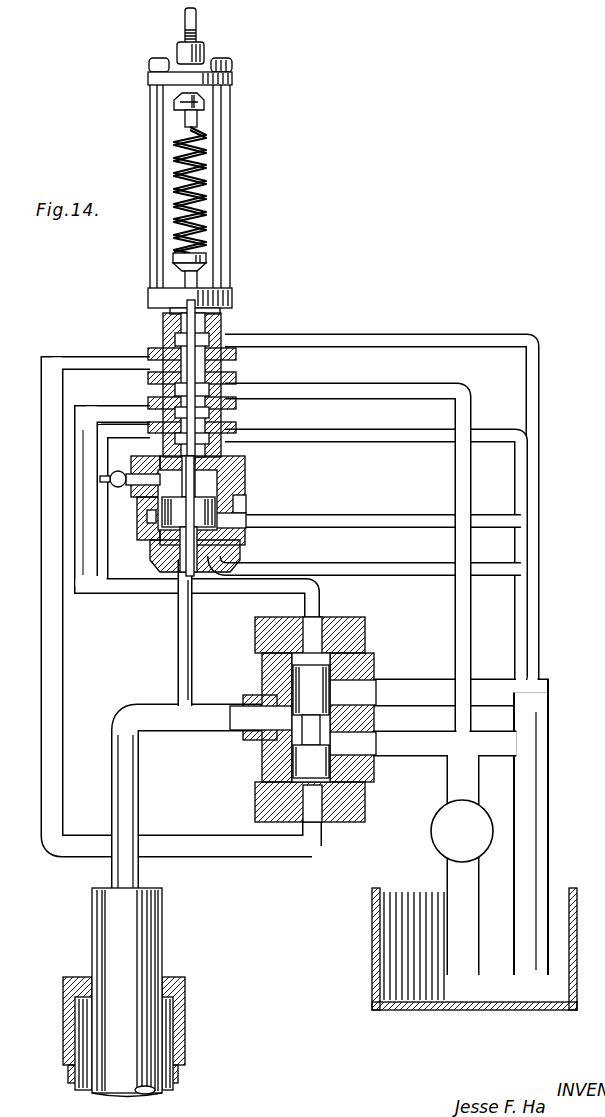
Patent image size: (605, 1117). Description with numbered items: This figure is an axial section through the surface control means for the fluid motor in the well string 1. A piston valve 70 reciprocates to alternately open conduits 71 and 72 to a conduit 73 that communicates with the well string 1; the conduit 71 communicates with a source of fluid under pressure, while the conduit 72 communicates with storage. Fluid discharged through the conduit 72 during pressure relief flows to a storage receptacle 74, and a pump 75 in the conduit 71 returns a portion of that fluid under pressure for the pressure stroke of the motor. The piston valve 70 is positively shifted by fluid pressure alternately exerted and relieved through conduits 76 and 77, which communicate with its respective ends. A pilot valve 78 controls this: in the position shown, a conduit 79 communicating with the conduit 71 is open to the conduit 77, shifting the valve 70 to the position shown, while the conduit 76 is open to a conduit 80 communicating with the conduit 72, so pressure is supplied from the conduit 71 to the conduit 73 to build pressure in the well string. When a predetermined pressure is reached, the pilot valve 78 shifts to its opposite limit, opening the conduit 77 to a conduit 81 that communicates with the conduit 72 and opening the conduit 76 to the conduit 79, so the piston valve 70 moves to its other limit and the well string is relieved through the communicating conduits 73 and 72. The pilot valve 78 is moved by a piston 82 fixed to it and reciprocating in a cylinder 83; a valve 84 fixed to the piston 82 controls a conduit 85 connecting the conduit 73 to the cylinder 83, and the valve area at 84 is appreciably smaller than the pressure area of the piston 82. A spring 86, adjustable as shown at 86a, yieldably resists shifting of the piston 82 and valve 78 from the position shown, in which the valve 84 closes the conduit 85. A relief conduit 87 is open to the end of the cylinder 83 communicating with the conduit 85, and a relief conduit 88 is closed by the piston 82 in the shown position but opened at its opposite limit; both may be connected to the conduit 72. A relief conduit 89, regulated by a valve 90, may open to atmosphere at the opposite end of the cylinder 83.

The well string 1 is at (132, 1048).
The piston valve 70 is at (318, 690).
The conduit 71 is at (403, 757).
The conduit 72 is at (404, 690).
The conduit 73 is at (124, 792).
The storage receptacle 74 is at (390, 942).
The pump 75 is at (446, 833).
The conduit 76 is at (260, 857).
The conduit 77 is at (320, 596).
The pilot valve 78 is at (224, 372).
The conduit 79 is at (318, 392).
The conduit 80 is at (330, 342).
The conduit 81 is at (355, 440).
The piston 82 is at (158, 545).
The cylinder 83 is at (222, 490).
The valve 84 is at (176, 575).
The conduit 85 is at (196, 575).
The spring 86 is at (203, 193).
The spring adjustment 86a is at (196, 36).
The relief conduit 87 is at (284, 558).
The relief conduit 88 is at (322, 516).
The relief conduit 89 is at (148, 457).
The valve 90 is at (118, 488).